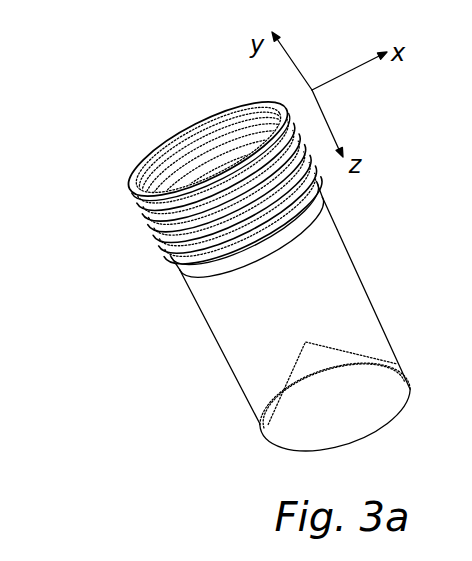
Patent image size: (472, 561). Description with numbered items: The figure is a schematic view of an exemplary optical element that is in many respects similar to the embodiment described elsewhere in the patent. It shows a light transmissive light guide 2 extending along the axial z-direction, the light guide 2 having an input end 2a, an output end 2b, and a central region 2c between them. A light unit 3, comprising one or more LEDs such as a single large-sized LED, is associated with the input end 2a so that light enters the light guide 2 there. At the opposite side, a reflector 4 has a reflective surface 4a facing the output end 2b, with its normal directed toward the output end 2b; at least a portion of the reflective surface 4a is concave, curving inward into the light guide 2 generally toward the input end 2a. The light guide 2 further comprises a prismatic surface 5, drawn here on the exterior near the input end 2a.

The light guide 2 is at (370, 228).
The input end 2a is at (305, 152).
The output end 2b is at (262, 413).
The central region 2c is at (240, 377).
The light unit 3 is at (197, 172).
The reflector 4 is at (367, 417).
The reflective surface 4a is at (350, 348).
The prismatic surface 5 is at (130, 248).